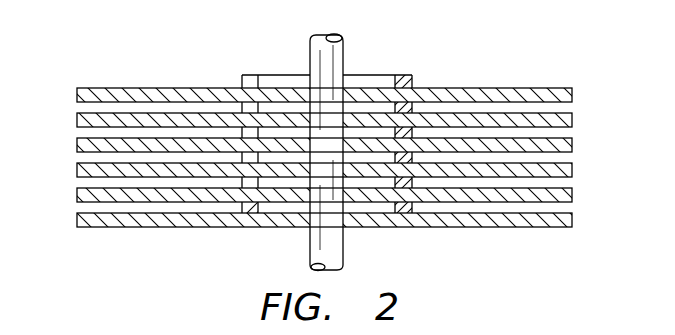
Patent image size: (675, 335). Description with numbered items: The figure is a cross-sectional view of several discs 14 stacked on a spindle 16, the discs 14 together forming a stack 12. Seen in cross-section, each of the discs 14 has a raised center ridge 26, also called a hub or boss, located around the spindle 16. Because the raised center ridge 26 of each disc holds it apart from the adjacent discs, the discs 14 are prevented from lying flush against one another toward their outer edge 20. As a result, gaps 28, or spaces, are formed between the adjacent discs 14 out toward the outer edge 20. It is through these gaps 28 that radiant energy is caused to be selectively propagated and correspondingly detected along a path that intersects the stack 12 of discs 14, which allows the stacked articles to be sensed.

The stack 12 is at (337, 170).
The discs 14 is at (126, 145).
The spindle 16 is at (335, 52).
The outer edge 20 is at (337, 145).
The raised center ridge 26 is at (413, 131).
The gaps 28 is at (83, 158).